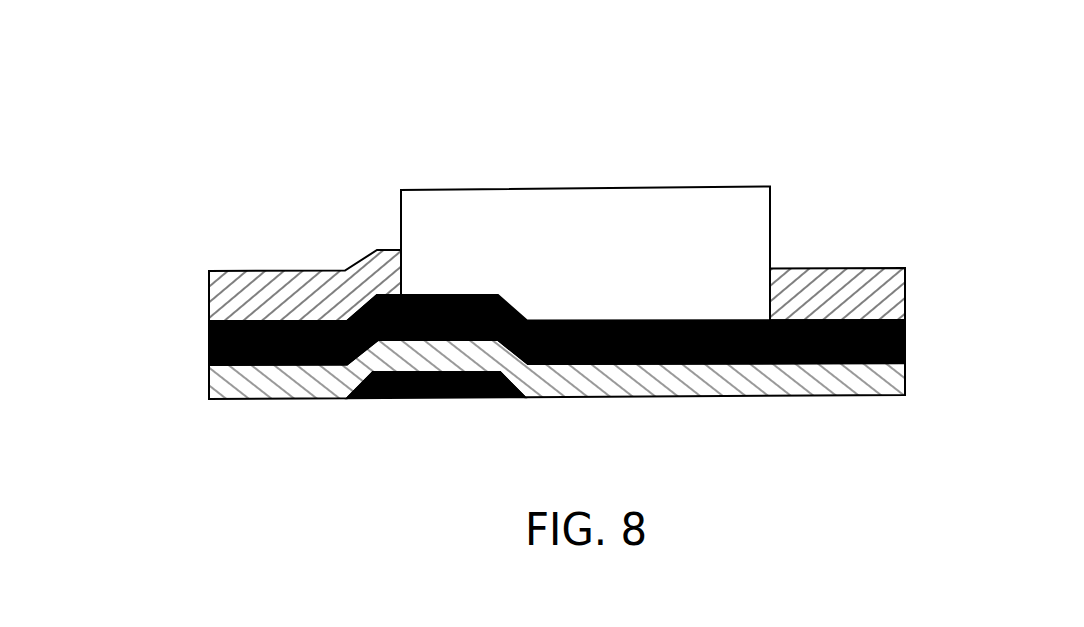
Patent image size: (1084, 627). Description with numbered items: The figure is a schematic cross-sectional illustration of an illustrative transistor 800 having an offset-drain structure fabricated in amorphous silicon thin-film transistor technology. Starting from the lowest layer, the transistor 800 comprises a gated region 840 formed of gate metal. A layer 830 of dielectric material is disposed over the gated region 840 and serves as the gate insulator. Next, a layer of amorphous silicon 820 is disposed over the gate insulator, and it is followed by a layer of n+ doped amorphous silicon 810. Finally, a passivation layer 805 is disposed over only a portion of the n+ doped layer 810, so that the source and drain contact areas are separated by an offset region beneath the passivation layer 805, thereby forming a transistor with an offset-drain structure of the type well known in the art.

The transistor 800 is at (517, 252).
The passivation layer 805 is at (514, 215).
The layer of n+ doped amorphous silicon 810 is at (905, 274).
The layer of amorphous silicon 820 is at (905, 327).
The layer of dielectric material 830 is at (905, 379).
The gated region 840 is at (512, 398).